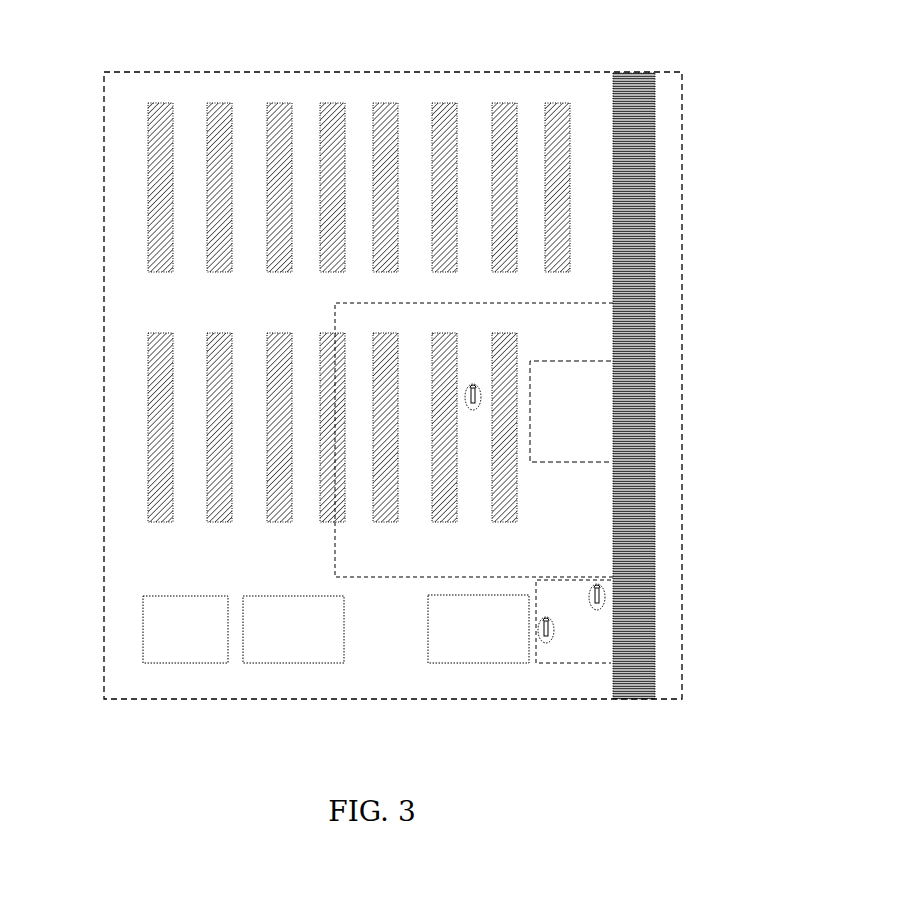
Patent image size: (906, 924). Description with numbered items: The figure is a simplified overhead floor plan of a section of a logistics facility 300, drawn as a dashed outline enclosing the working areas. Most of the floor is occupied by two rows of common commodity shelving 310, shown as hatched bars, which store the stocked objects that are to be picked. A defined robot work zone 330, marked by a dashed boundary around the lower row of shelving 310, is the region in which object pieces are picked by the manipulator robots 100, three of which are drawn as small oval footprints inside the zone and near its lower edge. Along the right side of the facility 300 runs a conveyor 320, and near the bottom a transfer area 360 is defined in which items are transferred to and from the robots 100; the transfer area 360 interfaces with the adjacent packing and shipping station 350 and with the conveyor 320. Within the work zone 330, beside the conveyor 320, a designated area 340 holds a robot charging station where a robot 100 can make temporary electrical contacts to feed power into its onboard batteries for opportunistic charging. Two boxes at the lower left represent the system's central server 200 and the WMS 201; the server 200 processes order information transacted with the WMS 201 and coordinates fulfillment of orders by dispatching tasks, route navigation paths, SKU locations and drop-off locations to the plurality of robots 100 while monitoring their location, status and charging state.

The manipulator robot 100 is at (558, 632).
The central server 200 is at (293, 629).
The WMS 201 is at (185, 629).
The logistics facility 300 is at (128, 68).
The common commodity shelving 310 is at (306, 312).
The conveyor 320 is at (642, 117).
The robot work zone 330 is at (588, 298).
The charging station area 340 is at (605, 390).
The packing and shipping station 350 is at (465, 667).
The transfer area 360 is at (577, 667).